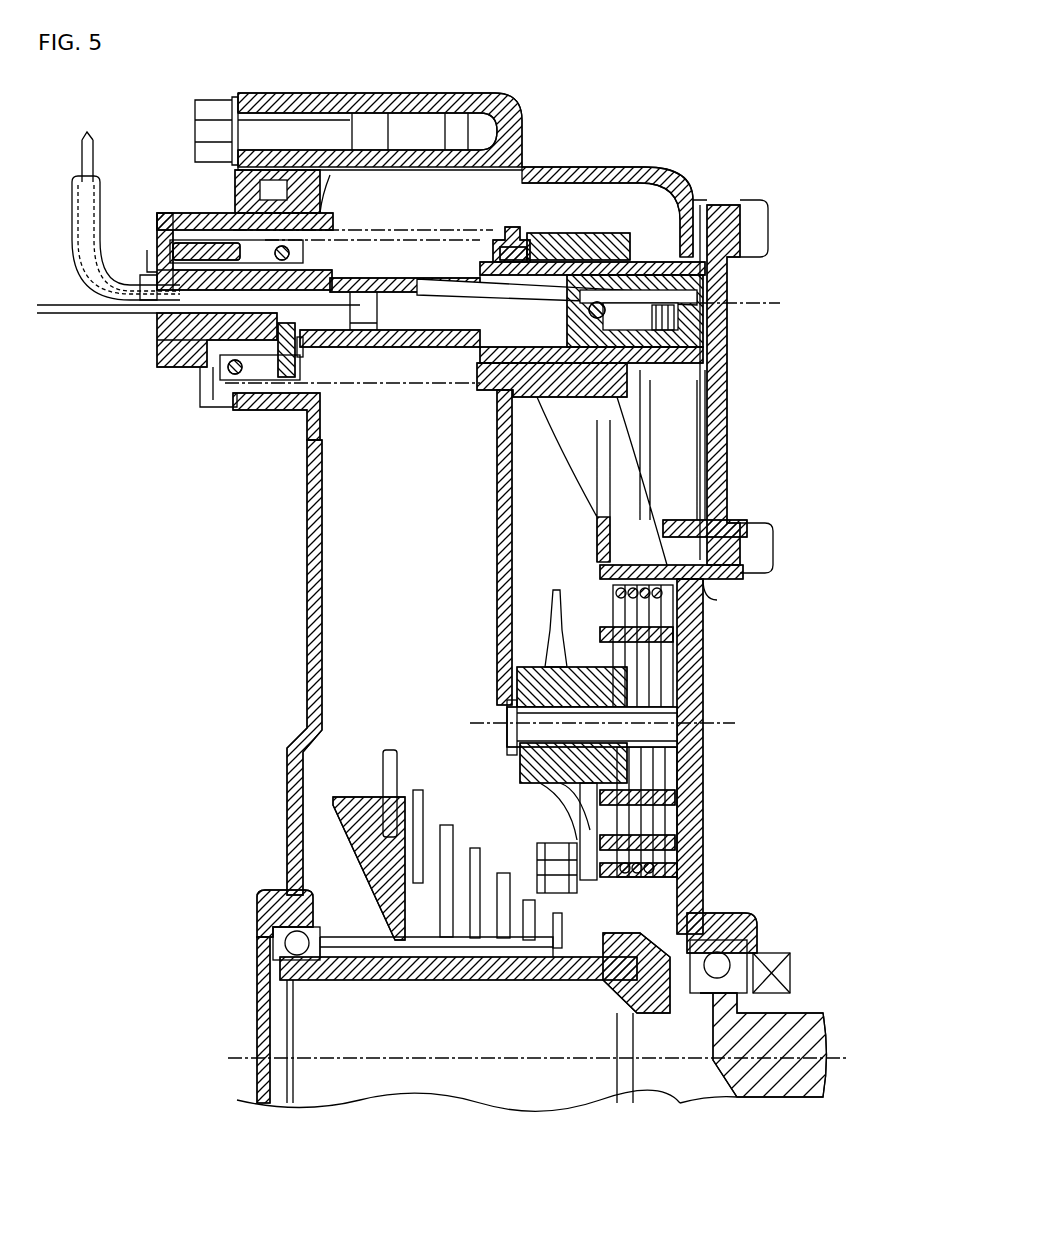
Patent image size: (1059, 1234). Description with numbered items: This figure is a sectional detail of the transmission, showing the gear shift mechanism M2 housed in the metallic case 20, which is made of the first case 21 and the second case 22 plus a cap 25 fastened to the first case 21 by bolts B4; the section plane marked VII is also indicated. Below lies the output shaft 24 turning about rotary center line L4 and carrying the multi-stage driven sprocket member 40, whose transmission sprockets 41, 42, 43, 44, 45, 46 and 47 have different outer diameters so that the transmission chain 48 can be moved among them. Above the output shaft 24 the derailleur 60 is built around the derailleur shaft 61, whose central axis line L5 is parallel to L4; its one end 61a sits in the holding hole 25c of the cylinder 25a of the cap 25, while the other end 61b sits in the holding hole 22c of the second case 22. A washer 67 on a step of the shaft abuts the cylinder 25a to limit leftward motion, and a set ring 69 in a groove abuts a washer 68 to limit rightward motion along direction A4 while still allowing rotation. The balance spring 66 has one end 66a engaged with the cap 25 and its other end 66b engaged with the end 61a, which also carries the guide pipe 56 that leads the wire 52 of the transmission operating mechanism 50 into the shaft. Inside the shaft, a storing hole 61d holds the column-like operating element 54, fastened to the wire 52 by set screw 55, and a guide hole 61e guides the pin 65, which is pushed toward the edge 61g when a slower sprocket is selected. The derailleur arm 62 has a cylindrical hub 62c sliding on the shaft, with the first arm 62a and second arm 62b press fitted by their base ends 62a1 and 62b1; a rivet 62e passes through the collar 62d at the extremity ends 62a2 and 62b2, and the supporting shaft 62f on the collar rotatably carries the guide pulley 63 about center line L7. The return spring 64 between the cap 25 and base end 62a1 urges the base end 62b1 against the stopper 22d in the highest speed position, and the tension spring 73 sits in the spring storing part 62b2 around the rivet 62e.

The case 20 is at (364, 52).
The first case part 21 is at (311, 100).
The second case part 22 is at (400, 100).
The holding hole 22c is at (723, 310).
The stopper 22d is at (657, 260).
The output shaft 24 is at (360, 980).
The cap 25 is at (282, 95).
The cylinder 25a is at (287, 263).
The holding hole 25c is at (203, 340).
The multi-stage driven sprocket member 40 is at (389, 745).
The transmission sprocket 41 is at (385, 760).
The transmission sprocket 42 is at (420, 798).
The transmission sprocket 43 is at (446, 838).
The transmission sprocket 44 is at (474, 860).
The transmission sprocket 45 is at (502, 882).
The transmission sprocket 46 is at (528, 912).
The transmission sprocket 47 is at (560, 925).
The transmission chain 48 is at (550, 845).
The transmission operating mechanism 50 is at (99, 332).
The wire 52 is at (95, 150).
The operating element 54 is at (637, 387).
The set screw 55 is at (688, 320).
The guide pipe 56 is at (118, 317).
The derailleur 60 is at (456, 416).
The derailleur shaft 61 is at (400, 346).
The one end of derailleur shaft 61a is at (187, 343).
The other end of derailleur shaft 61b is at (687, 220).
The storing hole 61d is at (362, 297).
The guide hole 61e is at (483, 297).
The other edge of guide hole 61g is at (425, 285).
The derailleur arm 62 is at (482, 508).
The first arm 62a is at (497, 455).
The base end of first arm 62a1 is at (505, 240).
The extremity end of first arm 62a2 is at (507, 750).
The second arm 62b is at (600, 535).
The base end of second arm 62b1 is at (590, 250).
The spring storing part 62b2 is at (663, 693).
The cylindrical hub 62c is at (553, 262).
The collar 62d is at (500, 763).
The rivet 62e is at (663, 733).
The supporting shaft 62f is at (507, 693).
The guide pulley 63 is at (560, 653).
The return spring 64 is at (410, 230).
The pin 65 is at (590, 312).
The balance spring 66 is at (263, 367).
The one end of balance spring 66a is at (197, 240).
The other end of balance spring 66b is at (300, 365).
The washer 67 is at (290, 258).
The washer 68 is at (147, 267).
The set ring 69 is at (150, 280).
The tension spring 73 is at (657, 840).
The bolts B4 is at (208, 130).
The rotary center line L4 is at (388, 1058).
The central axis line L5 is at (773, 303).
The rotary center line L7 is at (490, 723).
The gear shift mechanism M2 is at (441, 573).
The axial direction A4 is at (711, 96).
The section line VII is at (60, 294).